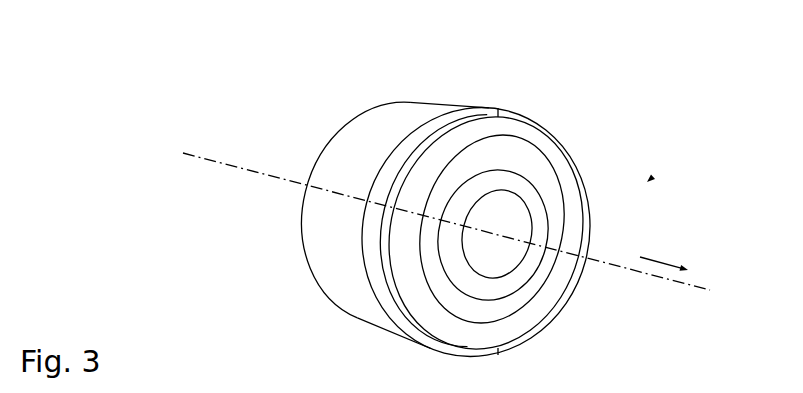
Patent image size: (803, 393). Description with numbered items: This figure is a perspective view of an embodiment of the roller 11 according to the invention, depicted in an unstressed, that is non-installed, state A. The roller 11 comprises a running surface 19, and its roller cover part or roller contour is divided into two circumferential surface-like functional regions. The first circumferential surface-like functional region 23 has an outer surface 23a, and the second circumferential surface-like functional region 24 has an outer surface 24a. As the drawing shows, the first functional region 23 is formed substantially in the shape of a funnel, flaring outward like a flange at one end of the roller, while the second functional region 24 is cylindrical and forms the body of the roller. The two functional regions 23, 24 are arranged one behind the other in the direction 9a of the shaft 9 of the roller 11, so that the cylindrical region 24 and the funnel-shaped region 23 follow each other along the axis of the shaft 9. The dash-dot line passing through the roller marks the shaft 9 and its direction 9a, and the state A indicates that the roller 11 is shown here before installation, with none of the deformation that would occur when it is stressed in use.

The roller 11 is at (318, 46).
The running surface 19 is at (430, 108).
The first circumferential surface-like functional region 23 is at (540, 141).
The outer surface 23a is at (364, 257).
The second circumferential surface-like functional region 24 is at (347, 153).
The outer surface 24a is at (357, 305).
The shaft 9 is at (700, 285).
The direction 9a is at (657, 257).
The unstressed state A is at (655, 175).